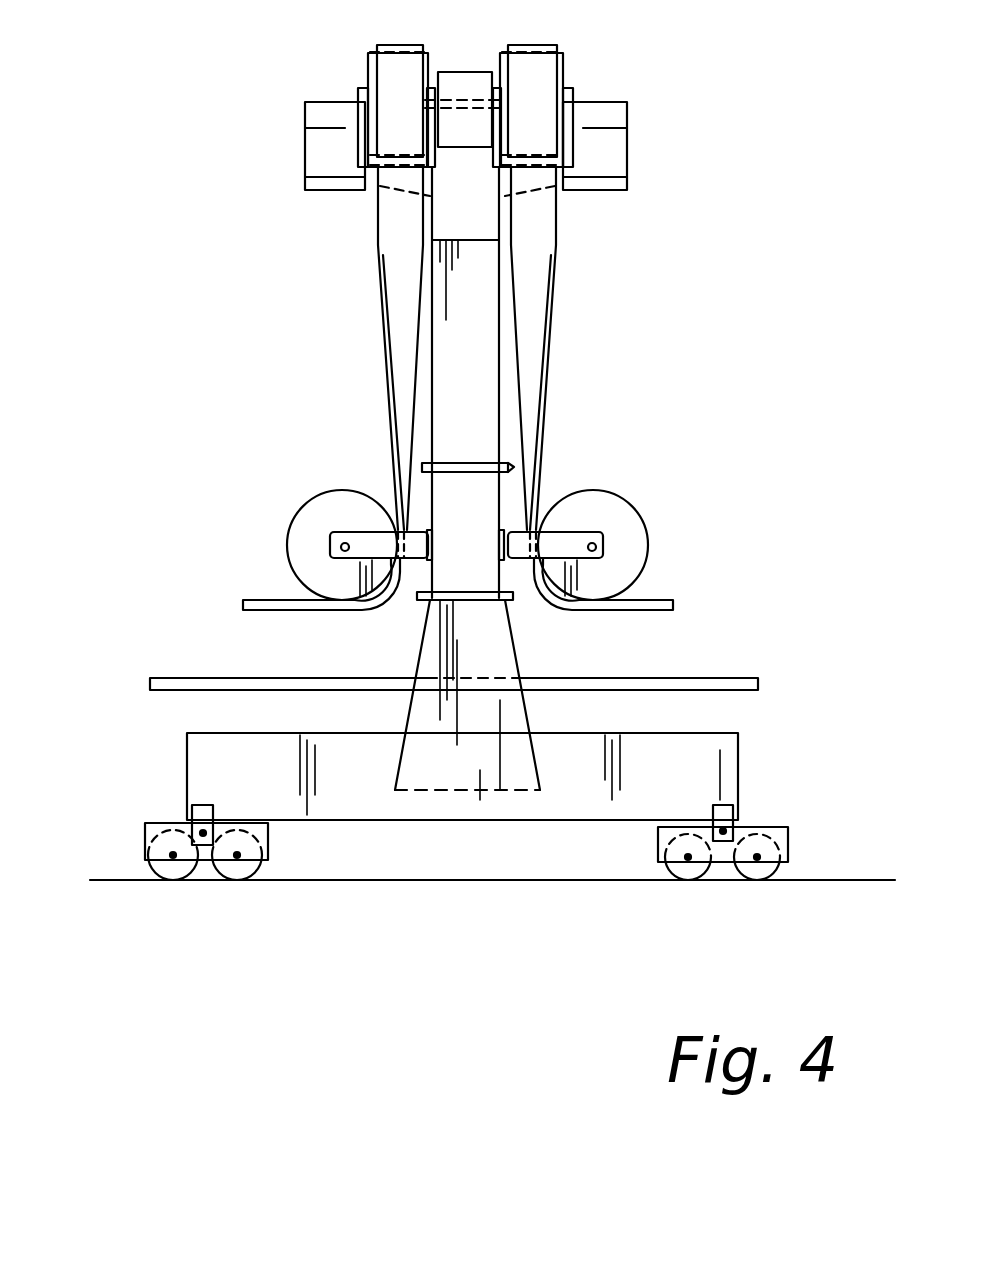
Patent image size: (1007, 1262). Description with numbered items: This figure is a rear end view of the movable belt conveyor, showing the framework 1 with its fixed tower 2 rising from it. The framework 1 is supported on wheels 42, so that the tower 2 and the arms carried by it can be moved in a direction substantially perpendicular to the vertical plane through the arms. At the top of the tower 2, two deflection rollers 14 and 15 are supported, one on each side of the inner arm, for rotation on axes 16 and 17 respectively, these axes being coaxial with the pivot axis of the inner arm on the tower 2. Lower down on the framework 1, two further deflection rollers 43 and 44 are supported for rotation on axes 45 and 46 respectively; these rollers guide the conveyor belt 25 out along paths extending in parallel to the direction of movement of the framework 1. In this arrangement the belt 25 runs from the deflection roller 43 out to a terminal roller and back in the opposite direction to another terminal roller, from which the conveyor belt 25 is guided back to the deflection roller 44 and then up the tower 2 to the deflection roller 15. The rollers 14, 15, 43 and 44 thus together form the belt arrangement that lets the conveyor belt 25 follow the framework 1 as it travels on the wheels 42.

The framework 1 is at (482, 516).
The tower 2 is at (477, 347).
The deflection roller 14 is at (375, 68).
The deflection roller 15 is at (560, 68).
The axis 16 is at (330, 103).
The axis 17 is at (572, 100).
The conveyor belt 25 is at (392, 243).
The wheels 42 is at (238, 875).
The deflection roller 43 is at (318, 510).
The deflection roller 44 is at (637, 508).
The axis 45 is at (345, 547).
The axis 46 is at (600, 547).